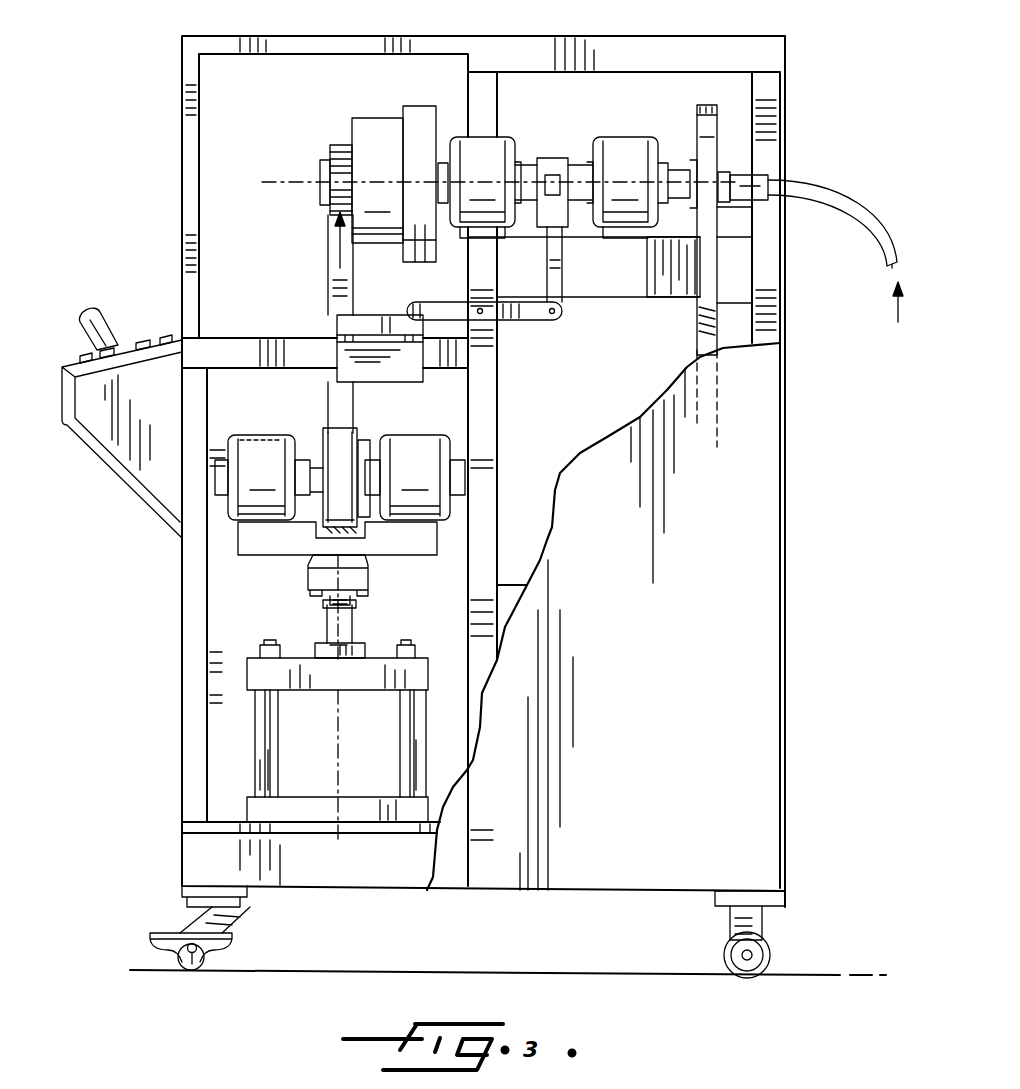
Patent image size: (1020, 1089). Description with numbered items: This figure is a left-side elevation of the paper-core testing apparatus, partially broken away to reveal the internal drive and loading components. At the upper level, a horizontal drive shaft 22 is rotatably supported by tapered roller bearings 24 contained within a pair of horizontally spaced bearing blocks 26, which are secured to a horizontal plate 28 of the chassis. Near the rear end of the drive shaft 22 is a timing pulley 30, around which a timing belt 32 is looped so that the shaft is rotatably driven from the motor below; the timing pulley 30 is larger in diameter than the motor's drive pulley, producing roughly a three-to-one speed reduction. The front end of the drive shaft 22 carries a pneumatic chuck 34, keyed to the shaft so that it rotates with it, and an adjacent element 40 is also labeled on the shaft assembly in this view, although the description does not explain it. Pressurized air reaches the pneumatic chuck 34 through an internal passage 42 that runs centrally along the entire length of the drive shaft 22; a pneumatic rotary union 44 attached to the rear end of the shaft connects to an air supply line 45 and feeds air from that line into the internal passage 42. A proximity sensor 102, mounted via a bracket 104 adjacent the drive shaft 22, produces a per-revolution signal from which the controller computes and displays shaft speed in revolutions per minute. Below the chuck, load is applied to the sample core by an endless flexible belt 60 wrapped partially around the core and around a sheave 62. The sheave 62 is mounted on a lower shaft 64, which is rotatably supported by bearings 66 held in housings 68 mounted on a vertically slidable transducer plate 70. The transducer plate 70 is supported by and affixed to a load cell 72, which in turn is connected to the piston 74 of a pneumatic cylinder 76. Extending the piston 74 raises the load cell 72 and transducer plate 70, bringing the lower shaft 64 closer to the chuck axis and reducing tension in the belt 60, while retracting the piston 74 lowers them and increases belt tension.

The drive shaft 22 is at (575, 213).
The tapered roller bearings 24 is at (500, 137).
The bearing blocks 26 is at (480, 138).
The horizontal plate 28 is at (630, 237).
The timing pulley 30 is at (717, 115).
The timing belt 32 is at (713, 283).
The pneumatic chuck 34 is at (352, 130).
The pulley 40 is at (383, 122).
The internal passage 42 is at (720, 207).
The pneumatic rotary union 44 is at (757, 178).
The air supply line 45 is at (865, 205).
The endless flexible belt 60 is at (352, 405).
The sheave 62 is at (328, 430).
The lower shaft 64 is at (310, 502).
The bearings 66 is at (268, 435).
The housings 68 is at (228, 505).
The transducer plate 70 is at (437, 548).
The load cell 72 is at (370, 582).
The piston 74 is at (360, 627).
The pneumatic cylinder 76 is at (255, 720).
The proximity sensor 102 is at (557, 158).
The bracket 104 is at (535, 215).